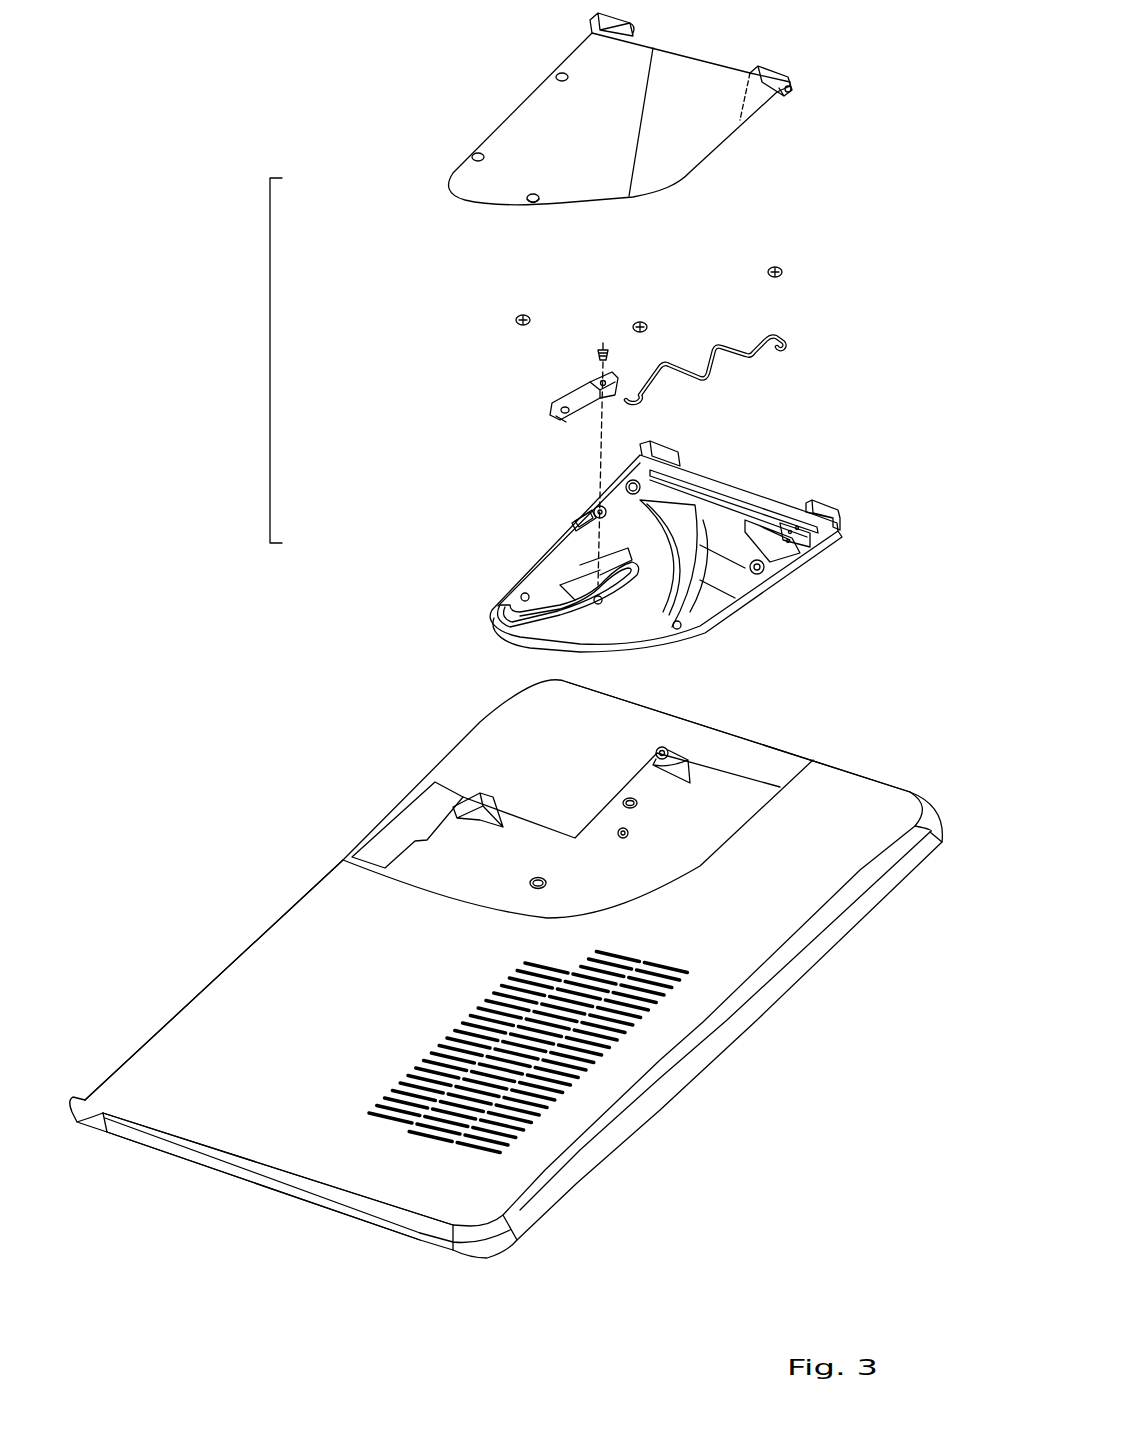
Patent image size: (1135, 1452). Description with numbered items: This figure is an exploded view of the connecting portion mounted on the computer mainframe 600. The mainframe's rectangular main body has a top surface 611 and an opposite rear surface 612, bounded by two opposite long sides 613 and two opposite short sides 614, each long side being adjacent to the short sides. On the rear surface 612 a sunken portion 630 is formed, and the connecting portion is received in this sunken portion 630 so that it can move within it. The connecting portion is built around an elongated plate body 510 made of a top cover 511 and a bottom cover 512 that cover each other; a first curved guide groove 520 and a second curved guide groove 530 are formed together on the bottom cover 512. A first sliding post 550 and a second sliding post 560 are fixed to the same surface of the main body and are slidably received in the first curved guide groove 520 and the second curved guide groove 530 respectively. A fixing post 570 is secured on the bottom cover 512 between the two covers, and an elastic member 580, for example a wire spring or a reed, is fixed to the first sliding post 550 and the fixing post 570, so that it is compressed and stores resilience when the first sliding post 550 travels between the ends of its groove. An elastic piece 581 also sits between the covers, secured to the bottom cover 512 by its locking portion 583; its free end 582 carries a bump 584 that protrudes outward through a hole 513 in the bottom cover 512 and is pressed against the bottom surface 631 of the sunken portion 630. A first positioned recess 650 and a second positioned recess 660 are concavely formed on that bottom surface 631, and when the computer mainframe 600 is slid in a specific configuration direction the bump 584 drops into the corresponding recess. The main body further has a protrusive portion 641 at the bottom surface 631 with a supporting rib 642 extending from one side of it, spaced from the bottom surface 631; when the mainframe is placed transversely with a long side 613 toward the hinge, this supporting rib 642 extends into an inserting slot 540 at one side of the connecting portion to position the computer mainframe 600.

The plate body 510 is at (270, 375).
The top cover 511 is at (463, 173).
The bottom cover 512 is at (533, 580).
The hole 513 is at (560, 612).
The first curved guide groove 520 is at (663, 590).
The second curved guide groove 530 is at (593, 615).
The inserting slot 540 is at (575, 518).
The first sliding post 550 is at (648, 326).
The second sliding post 560 is at (517, 318).
The fixing post 570 is at (782, 269).
The elastic member 580 is at (782, 336).
The elastic piece 581 is at (577, 393).
The free end 582 is at (552, 405).
The locking portion 583 is at (603, 343).
The bump 584 is at (563, 418).
The computer mainframe 600 is at (153, 1023).
The top surface 611 is at (267, 1187).
The rear surface 612 is at (352, 1170).
The long side 613 is at (293, 900).
The short side 614 is at (857, 773).
The sunken portion 630 is at (703, 847).
The bottom surface 631 is at (502, 747).
The protrusive portion 641 is at (457, 817).
The supporting rib 642 is at (478, 803).
The first positioned recess 650 is at (643, 800).
The second positioned recess 660 is at (550, 883).